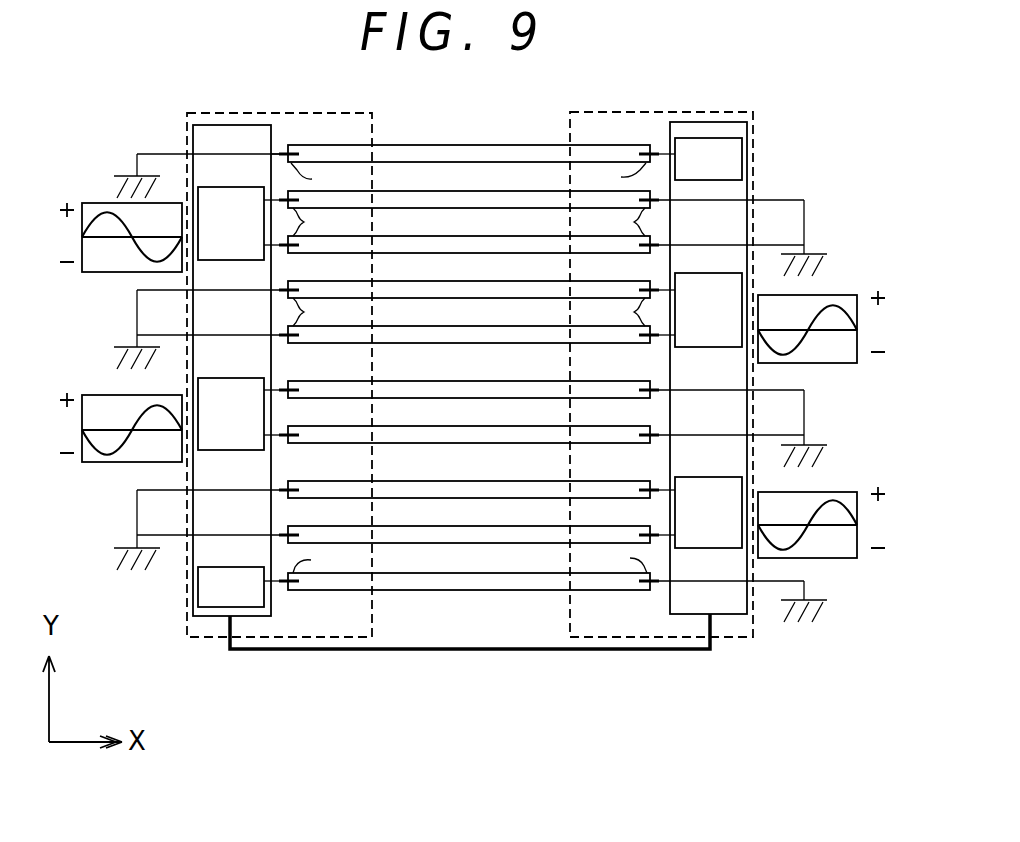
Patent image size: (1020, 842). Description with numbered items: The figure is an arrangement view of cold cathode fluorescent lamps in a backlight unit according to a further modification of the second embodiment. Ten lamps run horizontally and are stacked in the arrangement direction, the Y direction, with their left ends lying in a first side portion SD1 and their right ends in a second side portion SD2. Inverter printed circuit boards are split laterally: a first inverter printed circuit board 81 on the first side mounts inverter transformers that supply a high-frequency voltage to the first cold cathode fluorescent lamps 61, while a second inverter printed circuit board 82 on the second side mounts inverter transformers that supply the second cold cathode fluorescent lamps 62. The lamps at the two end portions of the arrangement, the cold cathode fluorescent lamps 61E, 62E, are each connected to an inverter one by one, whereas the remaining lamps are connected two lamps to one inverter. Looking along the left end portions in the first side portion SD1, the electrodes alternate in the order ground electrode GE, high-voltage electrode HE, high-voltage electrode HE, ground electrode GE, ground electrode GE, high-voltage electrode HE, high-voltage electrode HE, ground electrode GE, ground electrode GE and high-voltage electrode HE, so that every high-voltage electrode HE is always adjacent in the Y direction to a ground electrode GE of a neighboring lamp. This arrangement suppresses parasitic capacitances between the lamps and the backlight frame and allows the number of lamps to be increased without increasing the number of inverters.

The first inverter printed circuit board 81 is at (206, 618).
The second inverter printed circuit board 82 is at (727, 616).
The first cold cathode fluorescent lamp 61 is at (510, 209).
The second cold cathode fluorescent lamp 62 is at (507, 299).
The cold cathode fluorescent lamp at end portion 61E is at (487, 590).
The cold cathode fluorescent lamp at end portion 62E is at (502, 164).
The first side portion SD1 is at (288, 640).
The second side portion SD2 is at (615, 638).
The ground electrode GE is at (469, 368).
The high-voltage electrode HE is at (469, 369).